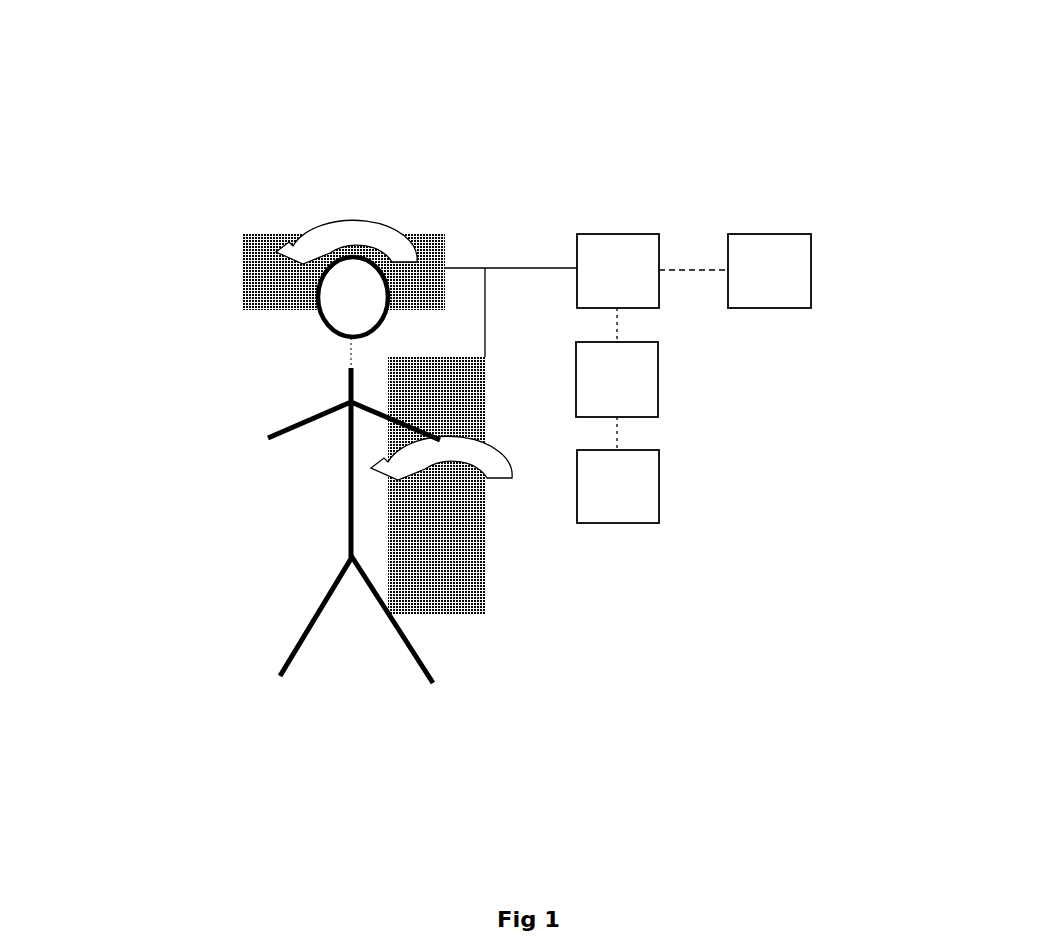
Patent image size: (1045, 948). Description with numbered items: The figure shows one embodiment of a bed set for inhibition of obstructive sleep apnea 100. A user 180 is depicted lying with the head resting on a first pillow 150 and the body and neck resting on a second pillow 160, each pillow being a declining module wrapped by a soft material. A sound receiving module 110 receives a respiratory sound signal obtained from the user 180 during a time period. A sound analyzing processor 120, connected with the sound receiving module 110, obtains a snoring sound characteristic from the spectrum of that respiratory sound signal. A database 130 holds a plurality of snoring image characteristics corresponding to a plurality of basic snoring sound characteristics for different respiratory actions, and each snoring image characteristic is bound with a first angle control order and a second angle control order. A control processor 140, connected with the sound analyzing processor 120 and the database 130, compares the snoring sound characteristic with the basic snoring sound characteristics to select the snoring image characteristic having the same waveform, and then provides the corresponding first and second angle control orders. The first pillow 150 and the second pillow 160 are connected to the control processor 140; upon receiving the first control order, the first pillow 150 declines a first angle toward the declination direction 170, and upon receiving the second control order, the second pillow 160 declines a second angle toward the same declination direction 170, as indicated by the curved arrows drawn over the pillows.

The bed set for inhibition of obstructive sleep apnea 100 is at (246, 160).
The sound receiving module 110 is at (645, 468).
The sound analyzing processor 120 is at (645, 378).
The database 130 is at (762, 252).
The control processor 140 is at (591, 250).
The first pillow 150 is at (242, 250).
The second pillow 160 is at (463, 592).
The declination direction 170 is at (292, 249).
The user 180 is at (337, 350).